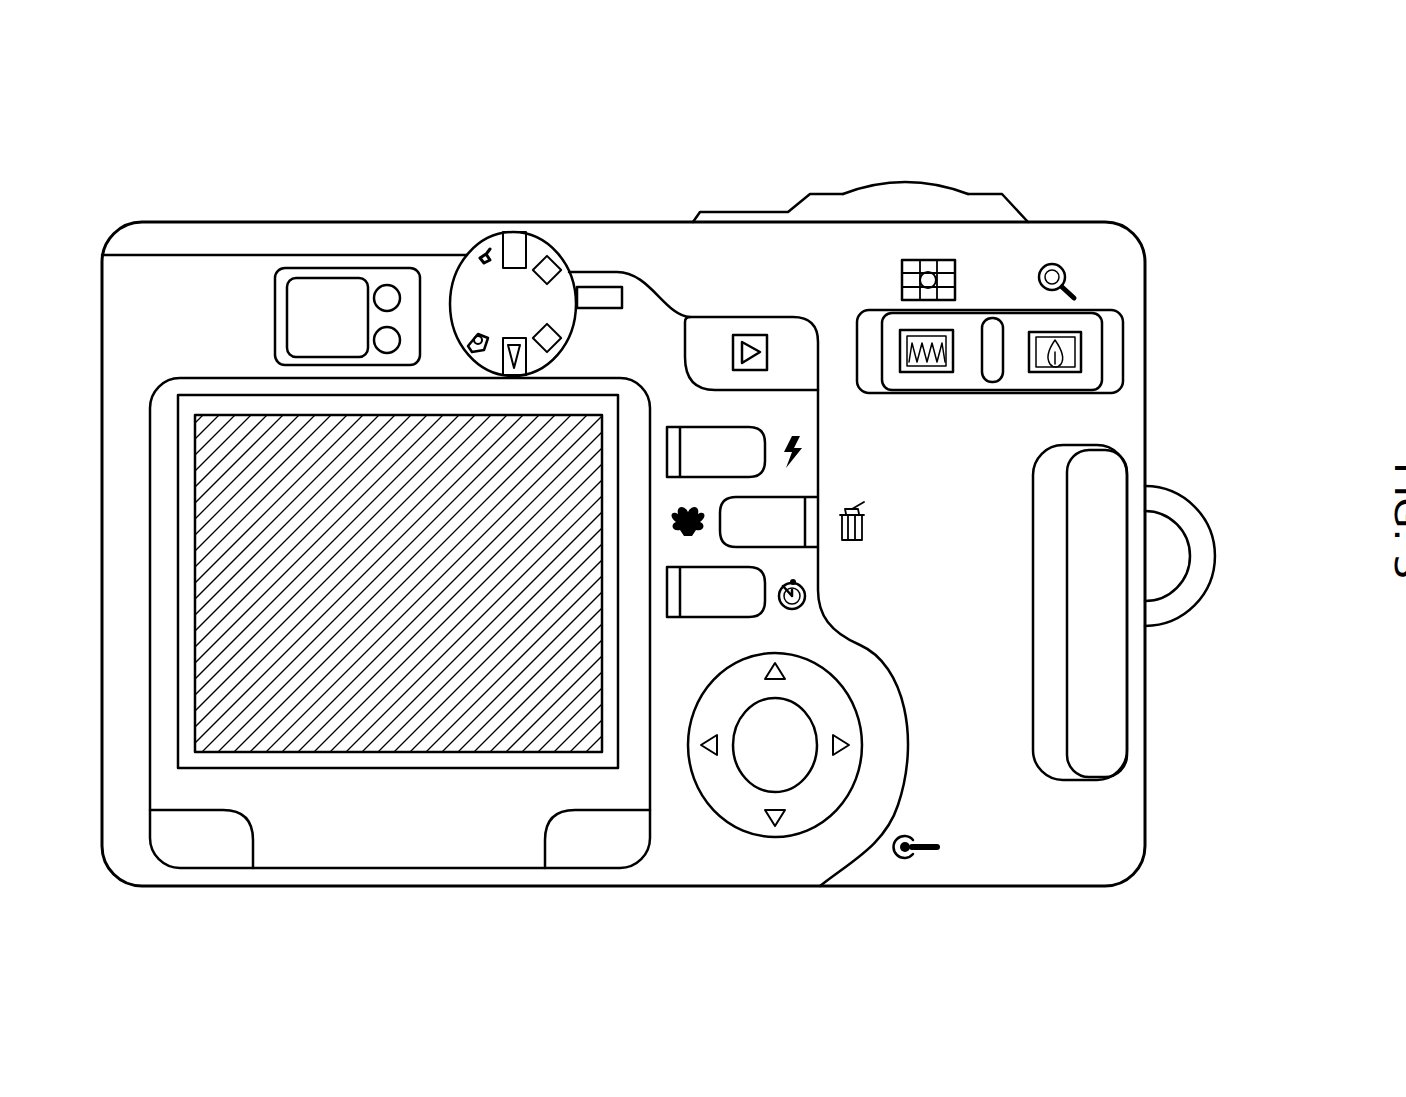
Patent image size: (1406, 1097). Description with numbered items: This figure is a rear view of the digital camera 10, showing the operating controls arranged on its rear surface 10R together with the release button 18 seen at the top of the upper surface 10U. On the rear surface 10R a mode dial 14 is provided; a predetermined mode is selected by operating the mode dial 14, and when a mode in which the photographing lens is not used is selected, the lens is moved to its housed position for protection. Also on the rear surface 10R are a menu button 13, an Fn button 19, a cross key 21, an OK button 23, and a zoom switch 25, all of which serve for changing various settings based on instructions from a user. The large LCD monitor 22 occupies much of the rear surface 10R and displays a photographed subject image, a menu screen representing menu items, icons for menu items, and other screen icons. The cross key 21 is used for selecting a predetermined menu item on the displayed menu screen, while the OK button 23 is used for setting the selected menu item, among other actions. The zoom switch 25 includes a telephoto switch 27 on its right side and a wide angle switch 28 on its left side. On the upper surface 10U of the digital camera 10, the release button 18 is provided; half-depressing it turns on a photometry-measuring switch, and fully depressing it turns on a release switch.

The digital camera 10 is at (1181, 140).
The upper surface 10U is at (318, 222).
The rear surface 10R is at (1088, 250).
The mode dial 14 is at (516, 232).
The release button 18 is at (907, 182).
The menu button 13 is at (198, 843).
The Fn button 19 is at (598, 845).
The cross key 21 is at (803, 810).
The LCD monitor 22 is at (178, 595).
The OK button 23 is at (762, 765).
The zoom switch 25 is at (1074, 387).
The telephoto switch (SWT) 27 is at (1081, 352).
The wide angle switch (SWW) 28 is at (930, 375).